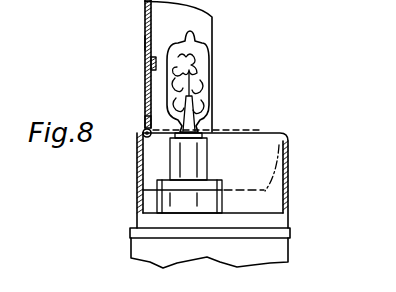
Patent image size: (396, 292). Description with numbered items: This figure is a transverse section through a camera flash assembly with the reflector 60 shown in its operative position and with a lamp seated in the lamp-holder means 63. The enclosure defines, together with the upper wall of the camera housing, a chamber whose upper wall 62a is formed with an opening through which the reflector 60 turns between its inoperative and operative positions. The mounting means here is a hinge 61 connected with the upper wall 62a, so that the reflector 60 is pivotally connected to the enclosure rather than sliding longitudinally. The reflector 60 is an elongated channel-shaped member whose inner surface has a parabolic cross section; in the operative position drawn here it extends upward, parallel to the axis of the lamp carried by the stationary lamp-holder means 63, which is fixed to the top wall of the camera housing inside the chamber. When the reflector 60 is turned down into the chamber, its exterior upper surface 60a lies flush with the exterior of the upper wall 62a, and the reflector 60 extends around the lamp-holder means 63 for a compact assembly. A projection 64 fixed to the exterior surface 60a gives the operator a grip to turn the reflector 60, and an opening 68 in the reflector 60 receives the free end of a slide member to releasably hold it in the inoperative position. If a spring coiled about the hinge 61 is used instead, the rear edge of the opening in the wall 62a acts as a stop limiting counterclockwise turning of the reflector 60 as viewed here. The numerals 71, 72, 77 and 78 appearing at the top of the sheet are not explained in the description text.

The reflector 60 is at (221, 37).
The exterior upper surface 60a is at (145, 65).
The hinge 61 is at (143, 129).
The upper wall 62a is at (254, 131).
The lamp-holder means 63 is at (208, 128).
The projection 64 is at (144, 3).
The opening 68 is at (144, 43).
The element 71 is at (313, 6).
The element 72 is at (343, 6).
The element 77 is at (376, 6).
The element 78 is at (271, 6).